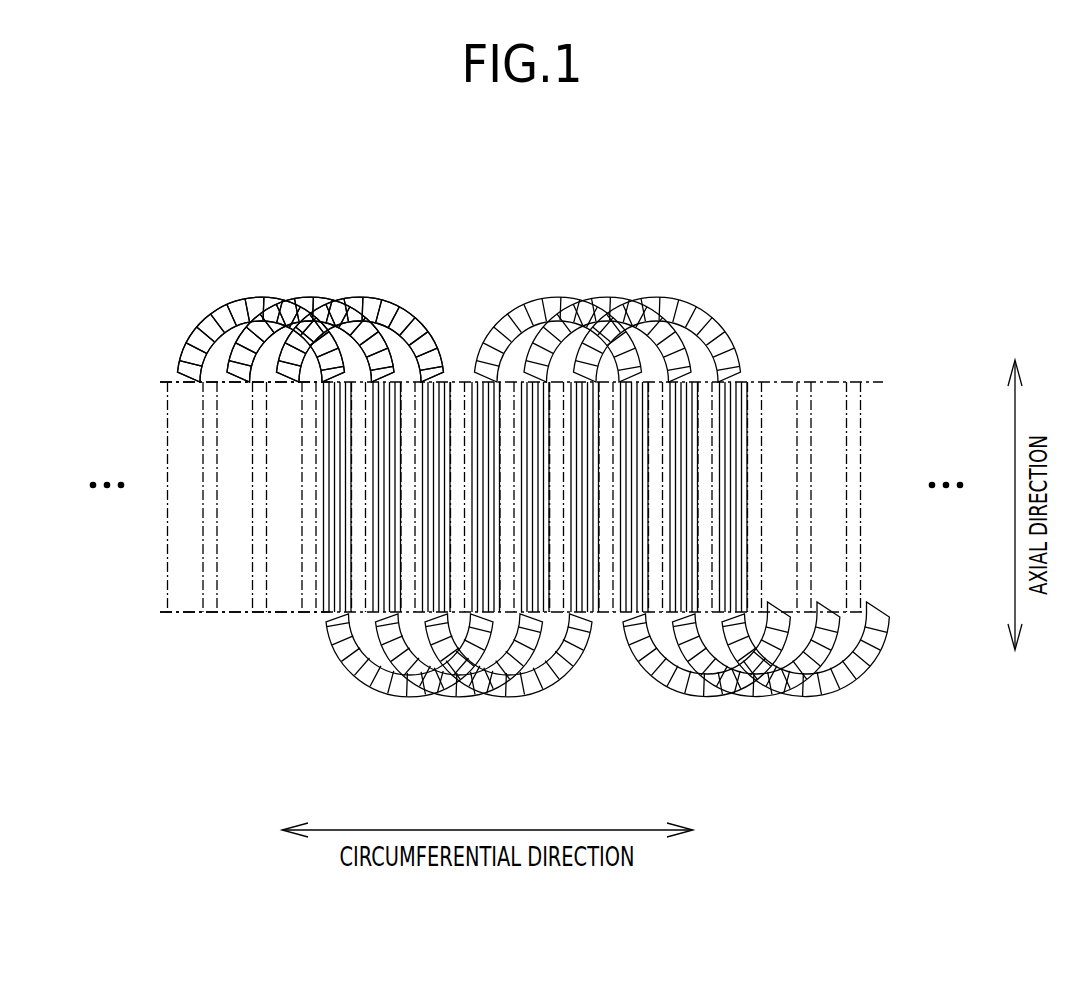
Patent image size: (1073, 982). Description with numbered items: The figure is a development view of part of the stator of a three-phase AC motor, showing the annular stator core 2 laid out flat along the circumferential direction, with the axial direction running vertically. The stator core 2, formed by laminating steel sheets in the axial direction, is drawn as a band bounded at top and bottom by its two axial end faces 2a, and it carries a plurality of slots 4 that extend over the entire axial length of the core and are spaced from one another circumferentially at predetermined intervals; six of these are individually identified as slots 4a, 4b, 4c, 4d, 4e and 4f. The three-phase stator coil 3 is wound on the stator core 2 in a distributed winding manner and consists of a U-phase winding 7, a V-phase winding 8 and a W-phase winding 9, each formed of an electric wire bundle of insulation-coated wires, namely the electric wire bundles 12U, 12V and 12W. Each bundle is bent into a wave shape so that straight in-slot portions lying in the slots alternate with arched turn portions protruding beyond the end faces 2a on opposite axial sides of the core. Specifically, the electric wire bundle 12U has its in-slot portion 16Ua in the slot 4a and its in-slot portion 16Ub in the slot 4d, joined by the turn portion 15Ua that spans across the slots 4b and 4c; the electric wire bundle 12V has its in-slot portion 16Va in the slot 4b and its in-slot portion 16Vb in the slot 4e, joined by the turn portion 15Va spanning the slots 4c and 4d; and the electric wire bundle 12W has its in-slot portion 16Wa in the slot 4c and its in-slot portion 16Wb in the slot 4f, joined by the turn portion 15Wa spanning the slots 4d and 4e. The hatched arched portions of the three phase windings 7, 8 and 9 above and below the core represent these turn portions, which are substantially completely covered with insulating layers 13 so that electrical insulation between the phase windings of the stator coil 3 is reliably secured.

The stator core 2 is at (844, 374).
The axial end face of the stator core 2a is at (167, 382).
The stator coil 3 is at (866, 691).
The slots 4 is at (782, 403).
The slot 4a is at (315, 623).
The slot 4b is at (352, 670).
The slot 4c is at (405, 665).
The slot 4d is at (490, 677).
The slot 4e is at (567, 670).
The slot 4f is at (594, 625).
The U-phase winding 7 is at (216, 301).
The V-phase winding 8 is at (295, 288).
The W-phase winding 9 is at (388, 288).
The electric wire bundle 12U is at (247, 297).
The electric wire bundle 12V is at (317, 297).
The electric wire bundle 12W is at (410, 323).
The insulating layers 13 is at (497, 327).
The turn portion 15Ua is at (378, 692).
The turn portion 15Va is at (452, 695).
The turn portion 15Wa is at (523, 690).
The in-slot portion 16Ua is at (333, 537).
The in-slot portion 16Va is at (383, 498).
The in-slot portion 16Wa is at (425, 452).
The in-slot portion 16Ub is at (483, 432).
The in-slot portion 16Vb is at (535, 442).
The in-slot portion 16Wb is at (587, 450).